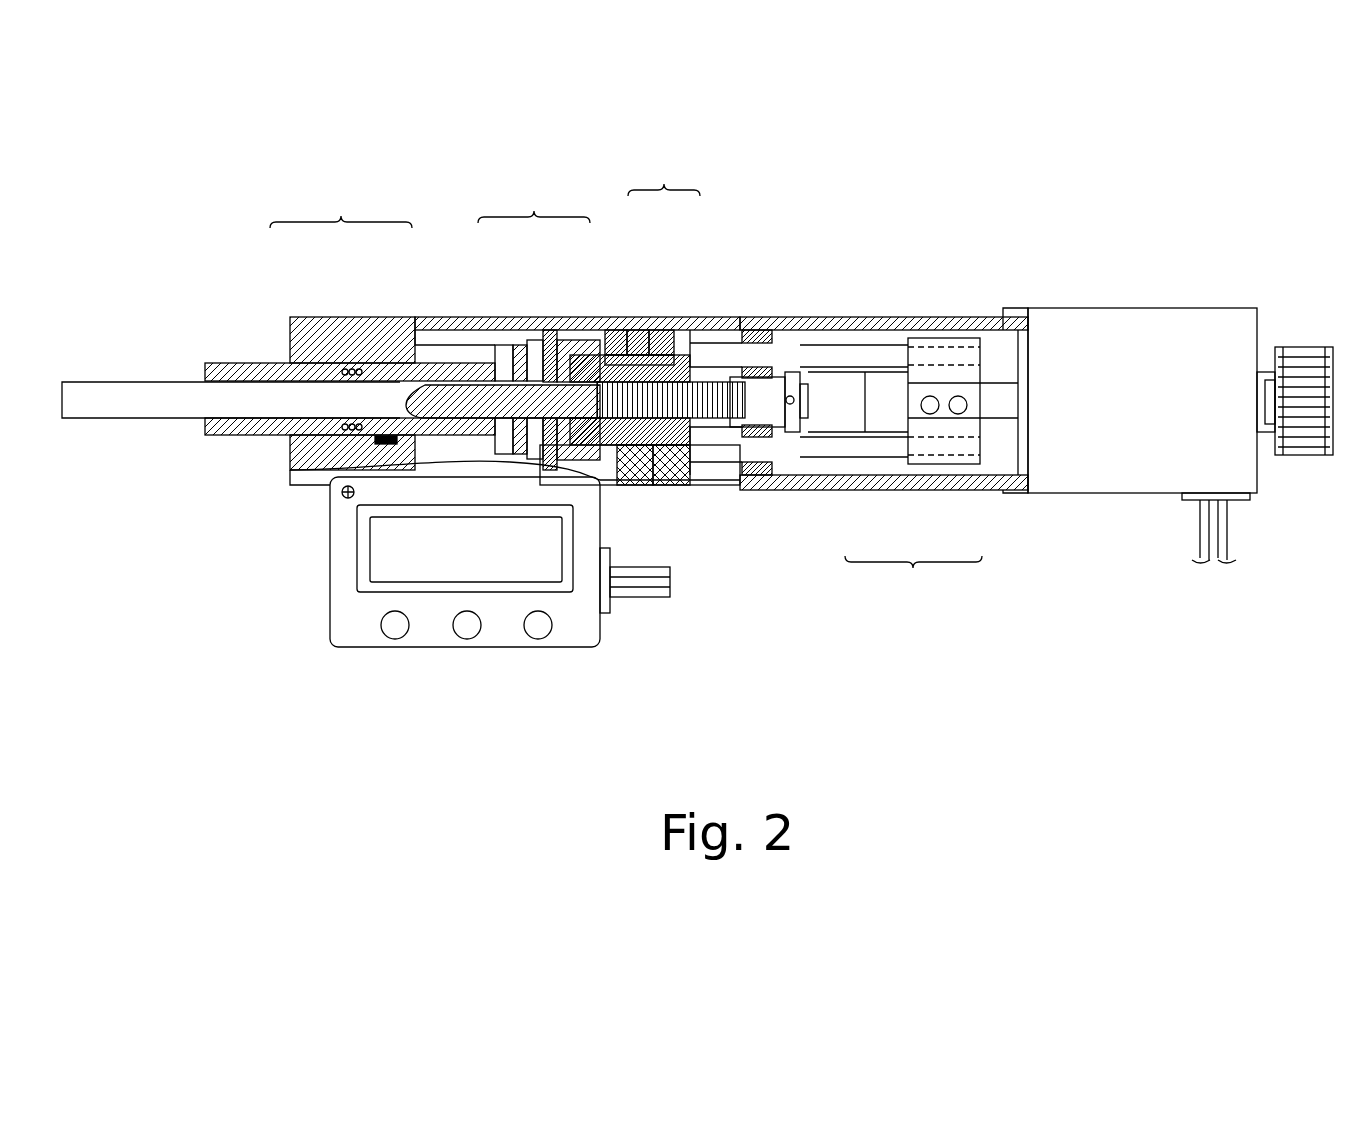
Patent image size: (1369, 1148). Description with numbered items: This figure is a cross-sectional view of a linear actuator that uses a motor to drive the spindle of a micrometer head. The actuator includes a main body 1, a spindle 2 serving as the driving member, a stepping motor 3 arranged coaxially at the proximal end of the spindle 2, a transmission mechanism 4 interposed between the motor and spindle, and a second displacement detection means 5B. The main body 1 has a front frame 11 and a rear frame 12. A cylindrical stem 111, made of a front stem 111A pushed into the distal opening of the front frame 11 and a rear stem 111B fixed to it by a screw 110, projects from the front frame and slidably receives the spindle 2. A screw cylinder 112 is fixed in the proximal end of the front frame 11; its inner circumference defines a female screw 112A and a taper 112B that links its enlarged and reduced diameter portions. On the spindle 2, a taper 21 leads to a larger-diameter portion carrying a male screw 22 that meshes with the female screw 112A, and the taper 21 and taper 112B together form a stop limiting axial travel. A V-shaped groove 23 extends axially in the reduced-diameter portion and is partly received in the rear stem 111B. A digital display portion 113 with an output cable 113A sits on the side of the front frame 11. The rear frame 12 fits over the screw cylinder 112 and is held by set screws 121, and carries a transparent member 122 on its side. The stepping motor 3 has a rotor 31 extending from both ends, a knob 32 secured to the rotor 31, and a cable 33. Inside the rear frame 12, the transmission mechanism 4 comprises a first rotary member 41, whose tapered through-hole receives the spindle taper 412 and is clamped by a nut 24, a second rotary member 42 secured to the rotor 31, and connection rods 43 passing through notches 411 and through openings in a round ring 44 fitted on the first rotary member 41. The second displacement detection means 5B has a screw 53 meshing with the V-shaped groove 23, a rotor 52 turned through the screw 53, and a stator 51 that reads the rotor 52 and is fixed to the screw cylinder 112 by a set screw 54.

The main body 1 is at (675, 174).
The spindle 2 is at (176, 420).
The stepping motor 3 is at (1108, 475).
The transmission mechanism 4 is at (921, 605).
The second displacement detection means 5B is at (534, 201).
The front frame 11 is at (614, 330).
The rear frame 12 is at (640, 330).
The taper 21 is at (705, 487).
The male screw 22 is at (738, 487).
The V-shaped groove 23 is at (441, 383).
The nut 24 is at (832, 382).
The rotor 31 is at (995, 397).
The knob 32 is at (1312, 355).
The cable 33 is at (1218, 535).
The first rotary member 41 is at (845, 487).
The second rotary member 42 is at (955, 487).
The connection rods 43 is at (880, 487).
The round ring 44 is at (768, 487).
The stator 51 is at (540, 342).
The rotor 52 is at (508, 345).
The screw 53 is at (522, 345).
The set screw 54 is at (580, 335).
The screw 110 is at (383, 453).
The stem 111 is at (341, 204).
The front stem 111A is at (299, 362).
The rear stem 111B is at (372, 318).
The screw cylinder 112 is at (728, 330).
The female screw 112A is at (690, 487).
The taper 112B is at (640, 487).
The digital display portion 113 is at (428, 570).
The output cable 113A is at (637, 595).
The set screws 121 is at (672, 330).
The transparent member 122 is at (832, 330).
The notches 411 is at (770, 487).
The taper 412 is at (748, 487).